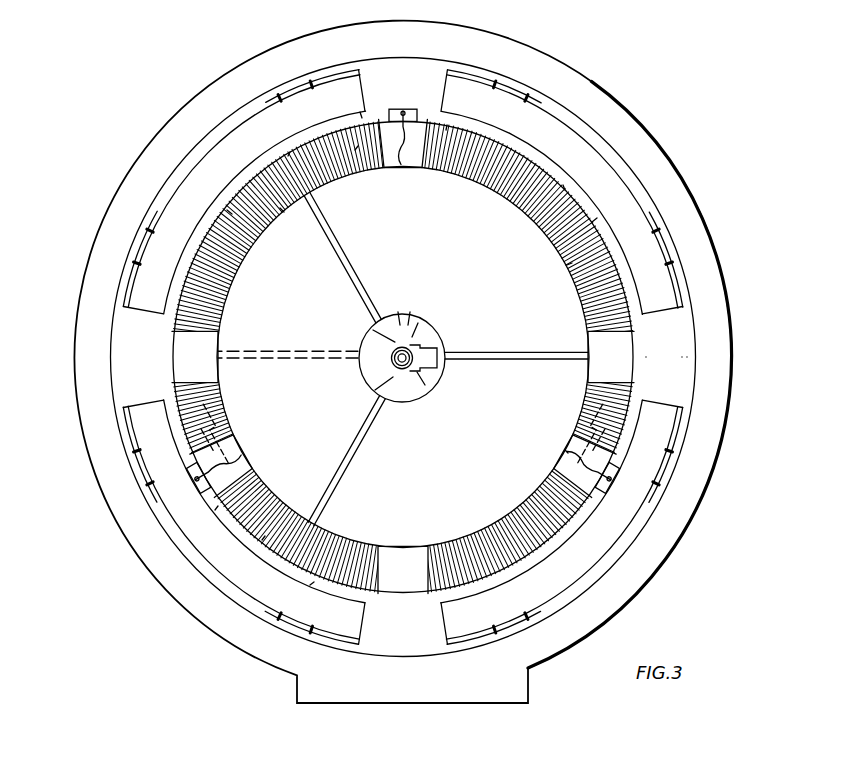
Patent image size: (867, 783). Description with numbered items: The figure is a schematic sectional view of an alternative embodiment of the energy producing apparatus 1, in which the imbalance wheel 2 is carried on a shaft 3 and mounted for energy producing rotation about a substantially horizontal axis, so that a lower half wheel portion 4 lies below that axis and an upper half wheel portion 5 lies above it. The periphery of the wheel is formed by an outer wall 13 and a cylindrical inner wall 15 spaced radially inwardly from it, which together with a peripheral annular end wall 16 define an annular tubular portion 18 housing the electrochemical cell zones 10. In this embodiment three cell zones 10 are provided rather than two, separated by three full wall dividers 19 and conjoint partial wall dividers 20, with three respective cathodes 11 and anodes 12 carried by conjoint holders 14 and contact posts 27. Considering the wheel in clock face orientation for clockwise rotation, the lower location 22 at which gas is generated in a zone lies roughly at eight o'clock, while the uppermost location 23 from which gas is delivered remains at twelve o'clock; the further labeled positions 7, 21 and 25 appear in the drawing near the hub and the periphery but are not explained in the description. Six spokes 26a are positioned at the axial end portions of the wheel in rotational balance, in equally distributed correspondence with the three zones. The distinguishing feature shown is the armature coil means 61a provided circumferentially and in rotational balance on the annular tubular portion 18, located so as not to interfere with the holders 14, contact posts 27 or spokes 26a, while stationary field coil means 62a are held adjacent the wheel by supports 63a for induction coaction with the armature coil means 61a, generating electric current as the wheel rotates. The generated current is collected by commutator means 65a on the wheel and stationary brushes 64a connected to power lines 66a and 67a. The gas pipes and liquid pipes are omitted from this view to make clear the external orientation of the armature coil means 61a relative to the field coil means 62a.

The energy producing apparatus 1 is at (135, 72).
The imbalance wheel 2 is at (227, 210).
The shaft 3 is at (380, 392).
The lower half wheel portion 4 is at (310, 585).
The upper half wheel portion 5 is at (563, 185).
The shaft 7 is at (410, 312).
The electrochemical cell zone 10 is at (227, 240).
The cathode 11 is at (403, 308).
The anode 12 is at (403, 436).
The outer wall 13 is at (597, 218).
The holder 14 is at (393, 110).
The inner wall 15 is at (567, 265).
The end wall 16 is at (290, 152).
The annular tubular portion 18 is at (280, 208).
The full wall divider 19 is at (500, 147).
The partial wall divider 20 is at (355, 150).
The magnet 21 is at (447, 125).
The lower location 22 is at (215, 510).
The uppermost location 23 is at (360, 112).
The bearing 25 is at (398, 312).
The spoke 26a is at (368, 243).
The contact post 27 is at (402, 125).
The armature coil means 61a is at (278, 230).
The field coil means 62a is at (226, 137).
The support 63a is at (112, 218).
The brush 64a is at (418, 323).
The commutator means 65a is at (372, 331).
The power line 66a is at (452, 350).
The power line 67a is at (455, 372).